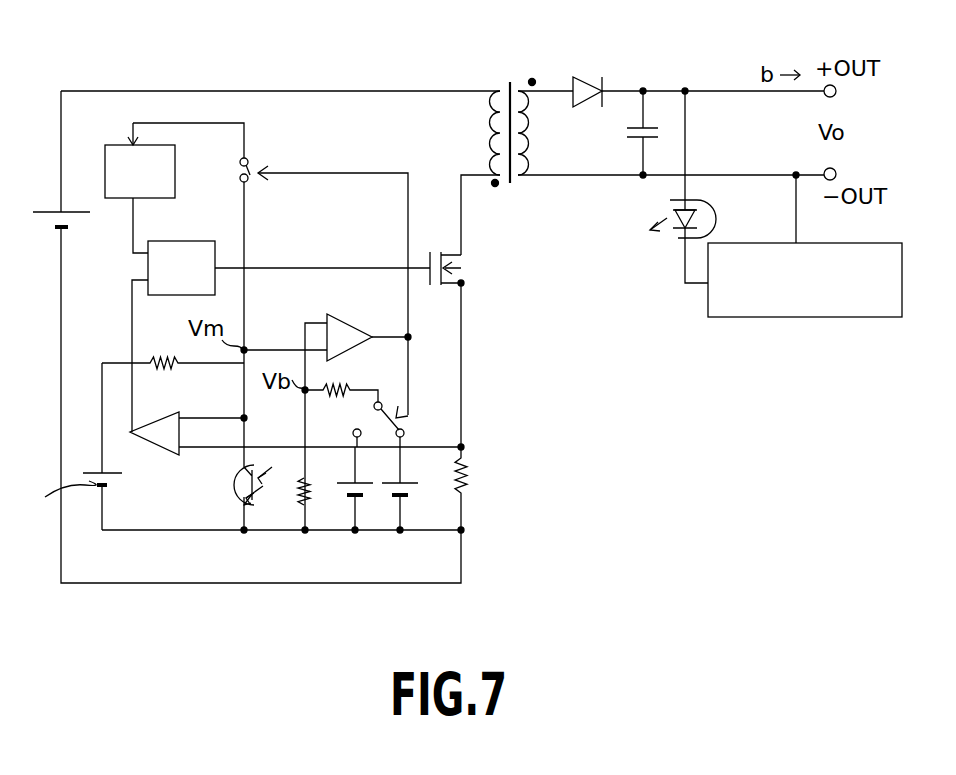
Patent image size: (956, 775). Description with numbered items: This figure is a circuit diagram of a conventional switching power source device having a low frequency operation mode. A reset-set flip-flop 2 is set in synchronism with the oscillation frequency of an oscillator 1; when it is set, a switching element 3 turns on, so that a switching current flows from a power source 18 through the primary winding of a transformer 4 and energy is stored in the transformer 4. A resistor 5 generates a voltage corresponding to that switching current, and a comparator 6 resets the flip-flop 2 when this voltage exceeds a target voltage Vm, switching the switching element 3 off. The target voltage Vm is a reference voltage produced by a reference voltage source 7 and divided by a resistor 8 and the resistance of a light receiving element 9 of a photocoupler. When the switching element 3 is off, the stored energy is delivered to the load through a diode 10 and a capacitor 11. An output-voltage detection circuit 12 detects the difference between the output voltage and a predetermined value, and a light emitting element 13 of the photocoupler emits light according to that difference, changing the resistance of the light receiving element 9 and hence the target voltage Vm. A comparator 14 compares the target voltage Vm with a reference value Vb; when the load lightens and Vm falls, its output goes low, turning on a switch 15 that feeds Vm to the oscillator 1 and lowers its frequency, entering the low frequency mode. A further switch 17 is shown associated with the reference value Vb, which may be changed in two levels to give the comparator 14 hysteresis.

The oscillator 1 is at (175, 167).
The flip-flop 2 is at (210, 241).
The switching element 3 is at (440, 250).
The transformer 4 is at (498, 91).
The resistor 5 is at (470, 468).
The comparator 6 is at (164, 450).
The reference voltage source 7 is at (96, 472).
The resistor 8 is at (168, 357).
The light receiving element 9 is at (232, 508).
The diode 10 is at (584, 77).
The capacitor 11 is at (656, 128).
The output-voltage detection circuit 12 is at (808, 318).
The light emitting element 13 is at (674, 239).
The comparator 14 is at (356, 314).
The switch 15 is at (249, 160).
The switch 17 is at (400, 428).
The power source 18 is at (40, 210).